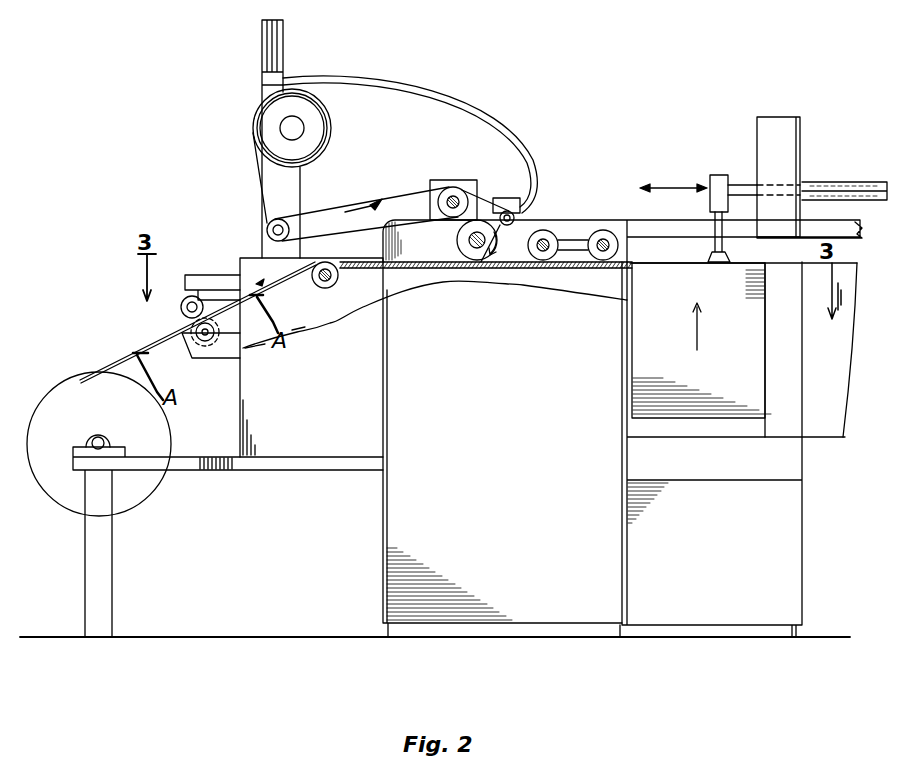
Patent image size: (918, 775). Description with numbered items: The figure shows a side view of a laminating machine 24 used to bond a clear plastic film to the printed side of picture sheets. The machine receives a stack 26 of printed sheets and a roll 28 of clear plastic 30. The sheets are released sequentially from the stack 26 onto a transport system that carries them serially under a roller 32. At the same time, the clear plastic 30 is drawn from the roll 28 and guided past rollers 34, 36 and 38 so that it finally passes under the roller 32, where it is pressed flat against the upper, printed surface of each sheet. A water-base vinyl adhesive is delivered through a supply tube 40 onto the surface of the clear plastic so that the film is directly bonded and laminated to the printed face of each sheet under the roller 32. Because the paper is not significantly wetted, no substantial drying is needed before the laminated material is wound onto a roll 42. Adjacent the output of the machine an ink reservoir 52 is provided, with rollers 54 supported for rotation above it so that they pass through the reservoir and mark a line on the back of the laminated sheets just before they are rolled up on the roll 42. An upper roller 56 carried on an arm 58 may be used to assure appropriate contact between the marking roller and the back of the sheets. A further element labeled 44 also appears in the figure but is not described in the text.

The laminating machine 24 is at (571, 194).
The stack 26 is at (688, 407).
The roll 28 is at (268, 113).
The clear plastic 30 is at (257, 163).
The roller 32 is at (483, 263).
The roller 34 is at (282, 219).
The roller 36 is at (440, 193).
The roller 38 is at (507, 211).
The supply tube 40 is at (417, 92).
The roll 42 is at (62, 392).
The piston actuator 44 is at (720, 160).
The ink reservoir 52 is at (227, 358).
The rollers 54 is at (218, 320).
The upper roller 56 is at (180, 306).
The arm 58 is at (190, 275).